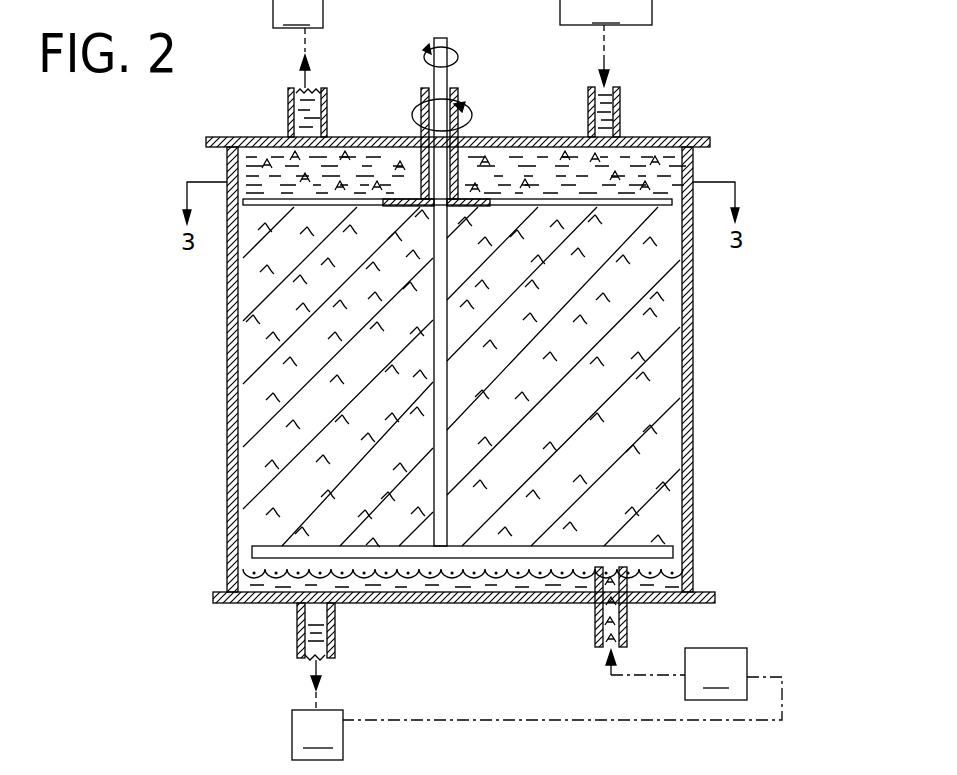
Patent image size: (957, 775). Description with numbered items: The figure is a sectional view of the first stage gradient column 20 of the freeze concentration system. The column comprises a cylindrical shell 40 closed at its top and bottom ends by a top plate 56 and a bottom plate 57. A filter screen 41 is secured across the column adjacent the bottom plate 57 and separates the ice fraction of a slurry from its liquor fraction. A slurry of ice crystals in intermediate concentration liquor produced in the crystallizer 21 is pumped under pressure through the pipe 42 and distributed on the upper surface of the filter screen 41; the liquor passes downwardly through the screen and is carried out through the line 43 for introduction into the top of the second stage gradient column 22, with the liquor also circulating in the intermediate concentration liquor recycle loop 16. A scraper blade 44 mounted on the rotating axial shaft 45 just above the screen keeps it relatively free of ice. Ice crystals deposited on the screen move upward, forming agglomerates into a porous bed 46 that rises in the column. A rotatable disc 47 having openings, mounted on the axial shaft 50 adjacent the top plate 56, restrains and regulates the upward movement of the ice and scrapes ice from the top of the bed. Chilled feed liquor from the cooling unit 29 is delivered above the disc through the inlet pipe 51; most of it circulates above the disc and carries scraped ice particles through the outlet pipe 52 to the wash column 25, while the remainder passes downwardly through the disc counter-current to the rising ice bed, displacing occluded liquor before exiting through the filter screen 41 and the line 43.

The intermediate concentration liquor recycle loop 16 is at (786, 691).
The first stage gradient column 20 is at (428, 364).
The crystallizer 21 is at (716, 674).
The second stage gradient column 22 is at (317, 735).
The wash column 25 is at (298, 26).
The cooling unit 29 is at (606, 29).
The cylindrical shell 40 is at (693, 403).
The filter screen 41 is at (680, 580).
The pipe 42 is at (627, 632).
The line 43 is at (335, 640).
The scraper blade 44 is at (672, 553).
The rotating axial shaft 45 is at (448, 74).
The porous bed 46 is at (265, 391).
The rotatable disc 47 is at (647, 206).
The axial shaft 50 is at (458, 100).
The inlet pipe 51 is at (588, 112).
The outlet pipe 52 is at (288, 110).
The top plate 56 is at (645, 137).
The bottom plate 57 is at (508, 603).